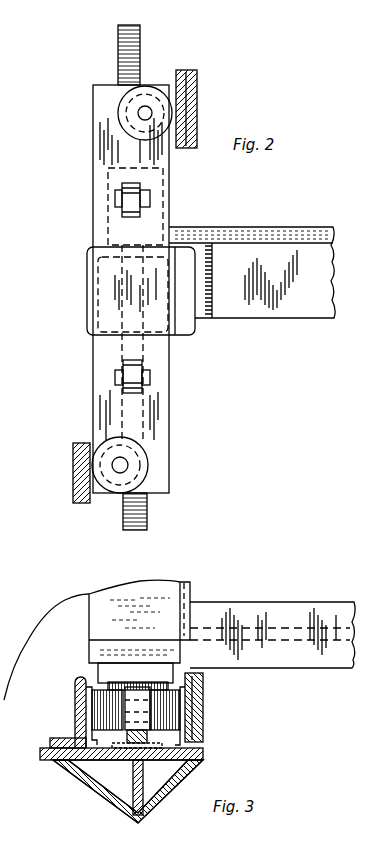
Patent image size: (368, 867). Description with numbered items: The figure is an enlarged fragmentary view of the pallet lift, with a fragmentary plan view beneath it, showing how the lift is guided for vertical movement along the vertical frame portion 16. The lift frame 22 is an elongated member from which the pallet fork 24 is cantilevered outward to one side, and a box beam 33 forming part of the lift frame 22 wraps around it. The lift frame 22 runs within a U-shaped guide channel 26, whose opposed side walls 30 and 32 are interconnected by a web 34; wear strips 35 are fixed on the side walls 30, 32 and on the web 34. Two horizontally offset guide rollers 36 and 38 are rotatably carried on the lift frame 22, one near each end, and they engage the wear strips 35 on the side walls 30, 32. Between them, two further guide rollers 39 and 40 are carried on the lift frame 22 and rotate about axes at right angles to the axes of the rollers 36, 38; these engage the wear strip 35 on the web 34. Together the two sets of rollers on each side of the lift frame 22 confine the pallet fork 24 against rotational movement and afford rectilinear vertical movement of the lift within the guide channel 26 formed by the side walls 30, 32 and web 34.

In FIG. 2, the opposed vertical frame portion 16 is at (52, 152).
In FIG. 2, the lift frame 22 is at (170, 362).
In FIG. 2, the pallet fork 24 is at (288, 228).
In FIG. 3, the pallet fork 24 is at (309, 606).
In FIG. 2, the U-shaped guide channel 26 is at (190, 107).
In FIG. 3, the U-shaped guide channel 26 is at (183, 708).
In FIG. 2, the side wall 30 is at (75, 445).
In FIG. 3, the side wall 30 is at (75, 684).
In FIG. 2, the side wall 32 is at (199, 73).
In FIG. 3, the side wall 32 is at (205, 683).
In FIG. 2, the box beam 33 is at (87, 290).
In FIG. 3, the box beam 33 is at (4, 578).
In FIG. 3, the web 34 is at (205, 752).
In FIG. 3, the wear strip 35 is at (75, 708).
In FIG. 2, the guide roller 36 is at (147, 86).
In FIG. 3, the guide roller 36 is at (175, 683).
In FIG. 2, the guide roller 38 is at (143, 465).
In FIG. 3, the guide roller 38 is at (88, 759).
In FIG. 2, the guide roller 39 is at (118, 186).
In FIG. 3, the guide roller 39 is at (115, 718).
In FIG. 2, the guide roller 40 is at (137, 388).